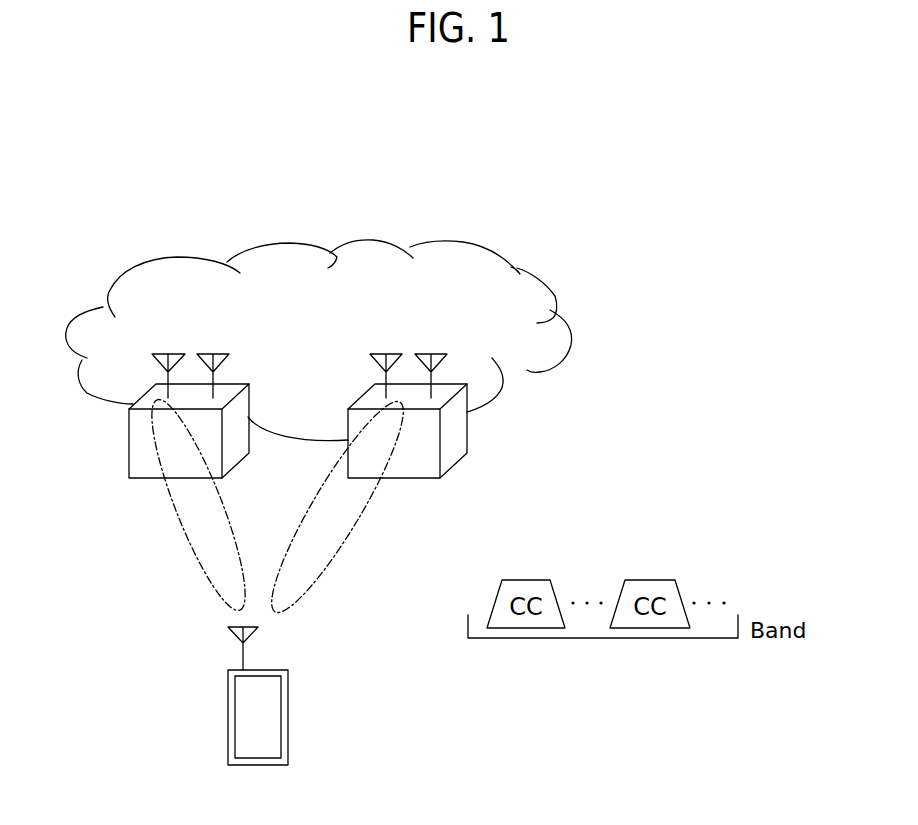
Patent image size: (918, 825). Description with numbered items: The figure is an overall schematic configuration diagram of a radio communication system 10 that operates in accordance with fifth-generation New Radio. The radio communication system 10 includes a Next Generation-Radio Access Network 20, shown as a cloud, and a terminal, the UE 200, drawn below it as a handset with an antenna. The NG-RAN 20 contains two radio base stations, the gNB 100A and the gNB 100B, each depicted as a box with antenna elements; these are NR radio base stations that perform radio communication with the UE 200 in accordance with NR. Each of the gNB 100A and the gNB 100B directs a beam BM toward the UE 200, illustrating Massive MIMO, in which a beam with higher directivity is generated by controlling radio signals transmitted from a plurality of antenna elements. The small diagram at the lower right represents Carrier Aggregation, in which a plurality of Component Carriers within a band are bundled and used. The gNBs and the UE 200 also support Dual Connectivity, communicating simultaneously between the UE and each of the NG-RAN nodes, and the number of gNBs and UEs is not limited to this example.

The radio communication system 10 is at (541, 216).
The Next Generation-Radio Access Network (NG-RAN) 20 is at (395, 240).
The radio base station (gNB) 100A is at (247, 385).
The radio base station (gNB) 100B is at (463, 385).
The terminal (User Equipment, UE) 200 is at (288, 710).
The beam BM is at (230, 518).